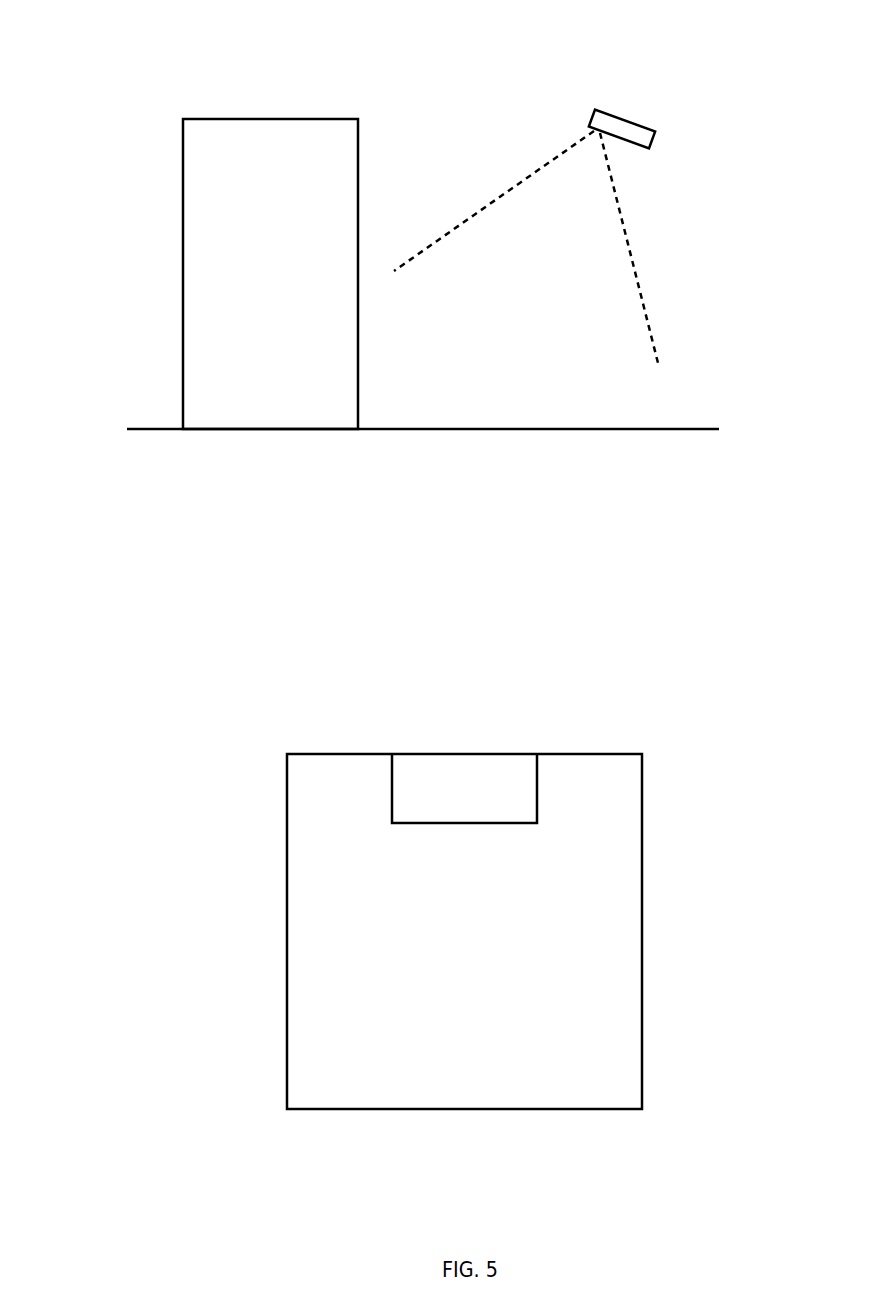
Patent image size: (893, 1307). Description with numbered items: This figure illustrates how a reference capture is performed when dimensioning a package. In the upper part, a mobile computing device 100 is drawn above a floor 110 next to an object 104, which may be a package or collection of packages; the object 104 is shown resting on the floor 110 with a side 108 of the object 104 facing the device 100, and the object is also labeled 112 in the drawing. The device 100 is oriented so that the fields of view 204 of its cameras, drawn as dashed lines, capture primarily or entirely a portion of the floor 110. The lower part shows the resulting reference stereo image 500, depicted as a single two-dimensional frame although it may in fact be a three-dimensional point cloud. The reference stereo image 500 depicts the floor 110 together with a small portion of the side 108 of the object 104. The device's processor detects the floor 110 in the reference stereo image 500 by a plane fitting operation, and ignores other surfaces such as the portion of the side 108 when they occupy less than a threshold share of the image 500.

The mobile computing device 100 is at (621, 97).
The object 104 is at (165, 152).
The first side 108 is at (453, 776).
The floor 110 is at (460, 430).
The object 112 is at (290, 286).
The fields of view 204 is at (635, 268).
The reference stereo image 500 is at (270, 900).